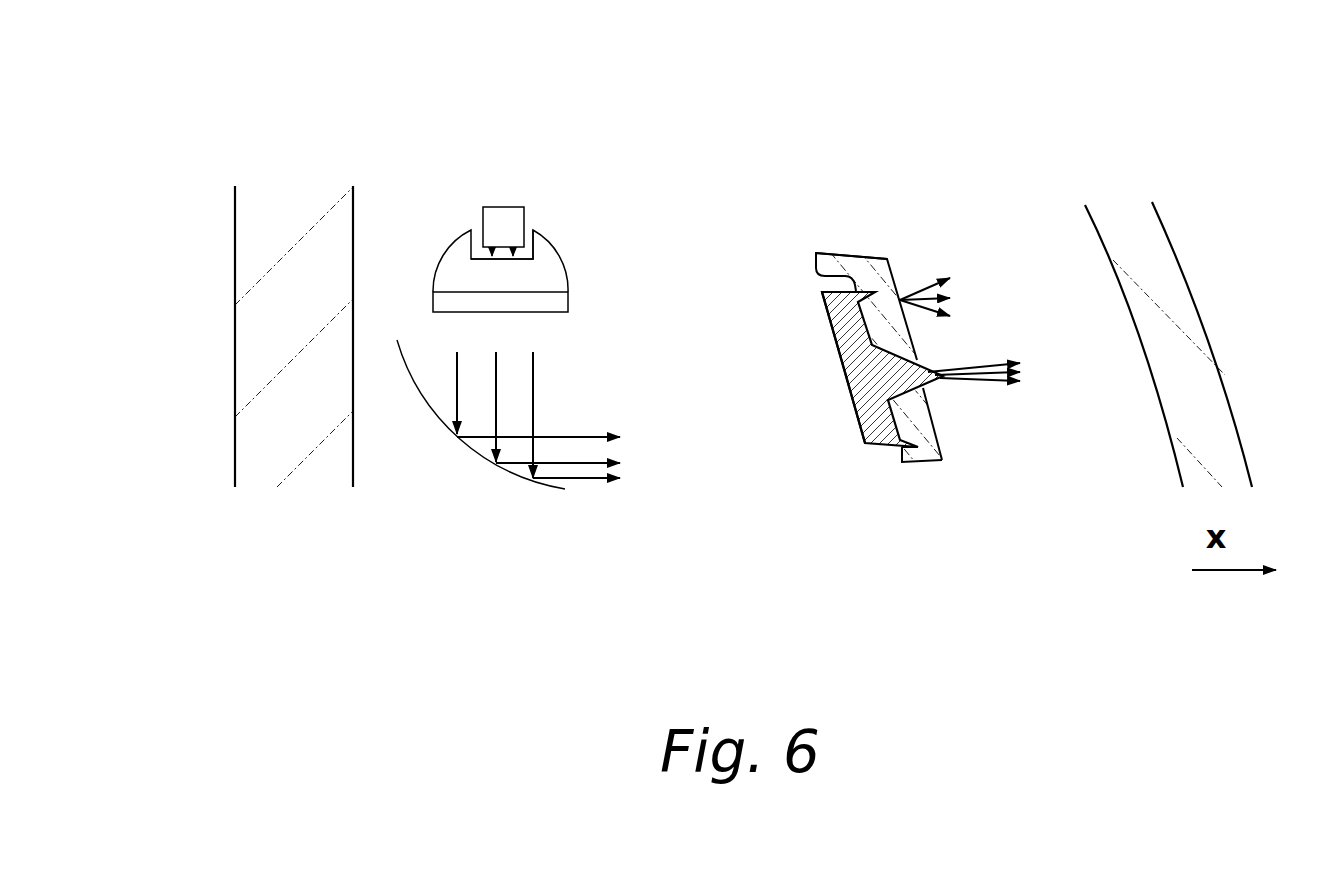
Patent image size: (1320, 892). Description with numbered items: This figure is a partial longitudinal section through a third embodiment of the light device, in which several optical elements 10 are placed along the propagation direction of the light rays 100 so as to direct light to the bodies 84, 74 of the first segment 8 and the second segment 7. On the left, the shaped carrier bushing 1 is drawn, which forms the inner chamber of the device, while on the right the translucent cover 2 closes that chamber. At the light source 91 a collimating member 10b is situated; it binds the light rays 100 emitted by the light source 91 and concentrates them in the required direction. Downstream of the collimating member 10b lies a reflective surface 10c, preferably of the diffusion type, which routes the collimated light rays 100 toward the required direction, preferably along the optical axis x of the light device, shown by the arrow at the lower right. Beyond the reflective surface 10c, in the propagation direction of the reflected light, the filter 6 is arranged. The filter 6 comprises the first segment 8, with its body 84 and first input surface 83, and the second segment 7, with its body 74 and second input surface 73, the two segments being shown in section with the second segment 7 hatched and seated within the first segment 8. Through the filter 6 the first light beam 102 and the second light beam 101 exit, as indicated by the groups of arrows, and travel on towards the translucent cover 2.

The carrier bushing 1 is at (226, 357).
The translucent cover 2 is at (1220, 332).
The filter 6 is at (936, 481).
The second segment 7 is at (832, 331).
The second input surface 73 is at (845, 382).
The body 74 is at (872, 421).
The first segment 8 is at (806, 263).
The first input surface 83 is at (900, 450).
The body 84 is at (875, 266).
The optical element 10 is at (565, 275).
The collimating member 10b is at (552, 239).
The reflective surface 10c is at (475, 454).
The light source 91 is at (503, 200).
The light ray 100 is at (492, 254).
The second light beam 101 is at (1019, 395).
The first light beam 102 is at (950, 264).